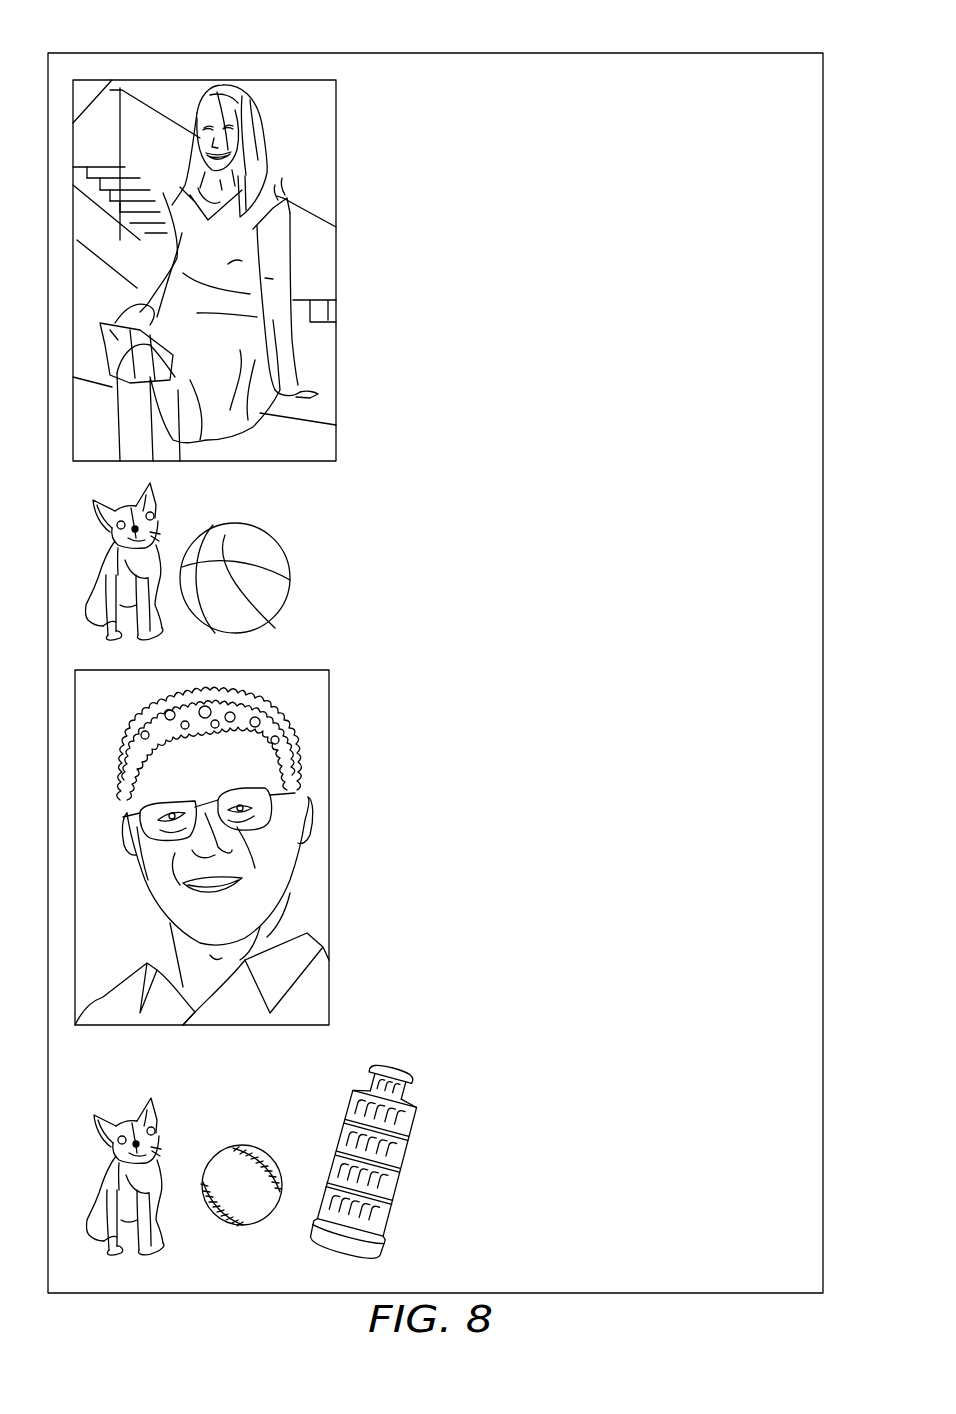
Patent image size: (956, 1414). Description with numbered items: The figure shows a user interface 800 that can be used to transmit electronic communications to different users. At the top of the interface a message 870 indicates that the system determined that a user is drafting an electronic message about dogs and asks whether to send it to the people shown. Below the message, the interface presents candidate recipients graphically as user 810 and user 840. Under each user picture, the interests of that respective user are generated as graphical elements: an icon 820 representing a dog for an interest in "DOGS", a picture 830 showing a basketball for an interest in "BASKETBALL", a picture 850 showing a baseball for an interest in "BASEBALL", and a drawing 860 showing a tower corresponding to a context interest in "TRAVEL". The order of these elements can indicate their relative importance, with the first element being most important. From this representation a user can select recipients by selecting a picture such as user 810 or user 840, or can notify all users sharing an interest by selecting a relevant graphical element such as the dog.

The user interface 800 is at (655, 53).
The user 810 is at (338, 170).
The icon representing a dog 820 is at (162, 500).
The picture showing a basketball 830 is at (290, 580).
The user 840 is at (329, 808).
The picture showing a baseball 850 is at (258, 1147).
The drawing showing a tower 860 is at (415, 1138).
The message 870 is at (563, 212).